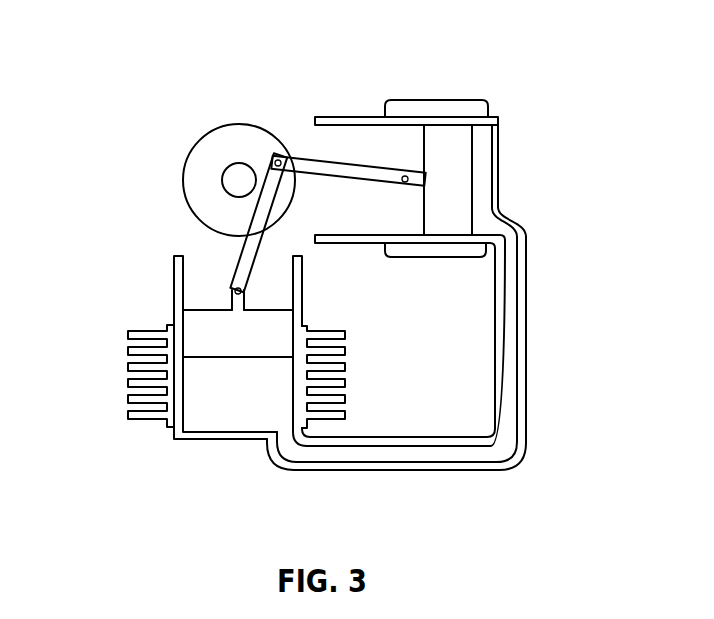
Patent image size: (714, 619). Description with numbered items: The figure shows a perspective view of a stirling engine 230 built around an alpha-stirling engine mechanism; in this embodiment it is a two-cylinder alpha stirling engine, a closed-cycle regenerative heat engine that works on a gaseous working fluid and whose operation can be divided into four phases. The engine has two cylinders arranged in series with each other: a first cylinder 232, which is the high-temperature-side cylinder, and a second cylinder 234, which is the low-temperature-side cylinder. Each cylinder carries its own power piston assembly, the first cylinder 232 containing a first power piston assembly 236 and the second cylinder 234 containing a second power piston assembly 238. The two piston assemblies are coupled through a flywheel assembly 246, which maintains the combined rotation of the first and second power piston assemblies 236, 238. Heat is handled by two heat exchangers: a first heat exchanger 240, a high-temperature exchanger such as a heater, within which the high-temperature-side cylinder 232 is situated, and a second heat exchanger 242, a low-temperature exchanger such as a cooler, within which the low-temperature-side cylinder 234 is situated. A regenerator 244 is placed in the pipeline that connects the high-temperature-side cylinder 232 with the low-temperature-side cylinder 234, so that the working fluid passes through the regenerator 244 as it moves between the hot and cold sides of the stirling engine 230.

The stirling engine 230 is at (139, 72).
The first cylinder 232 is at (498, 160).
The second cylinder 234 is at (203, 433).
The first power piston assembly 236 is at (310, 158).
The second power piston assembly 238 is at (237, 252).
The first heat exchanger 240 is at (436, 100).
The second heat exchanger 242 is at (128, 385).
The regenerator 244 is at (485, 472).
The flywheel assembly 246 is at (184, 177).